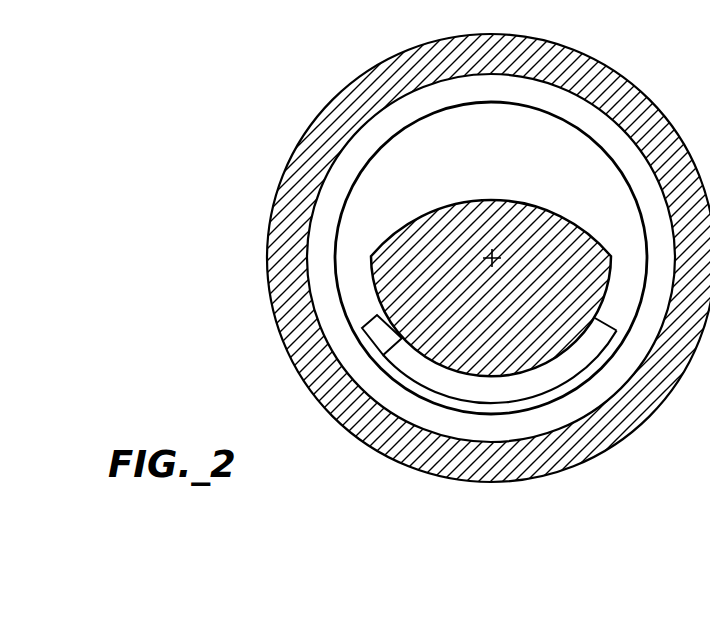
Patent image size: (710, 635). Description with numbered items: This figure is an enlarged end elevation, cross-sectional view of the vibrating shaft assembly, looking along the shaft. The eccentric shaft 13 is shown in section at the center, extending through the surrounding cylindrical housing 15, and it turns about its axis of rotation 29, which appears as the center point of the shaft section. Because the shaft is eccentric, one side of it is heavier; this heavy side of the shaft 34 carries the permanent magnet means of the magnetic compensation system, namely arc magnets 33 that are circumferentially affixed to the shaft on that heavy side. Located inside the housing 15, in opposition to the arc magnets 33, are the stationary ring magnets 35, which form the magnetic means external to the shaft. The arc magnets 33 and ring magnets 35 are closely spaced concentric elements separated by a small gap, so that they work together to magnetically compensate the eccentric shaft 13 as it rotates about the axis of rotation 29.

The cylindrical housing 15 is at (562, 43).
The eccentric shaft 13 is at (513, 202).
The axis of rotation 29 is at (492, 258).
The heavy side of the shaft 34 is at (402, 338).
The arc magnets 33 is at (423, 376).
The stationary ring magnets 35 is at (445, 428).